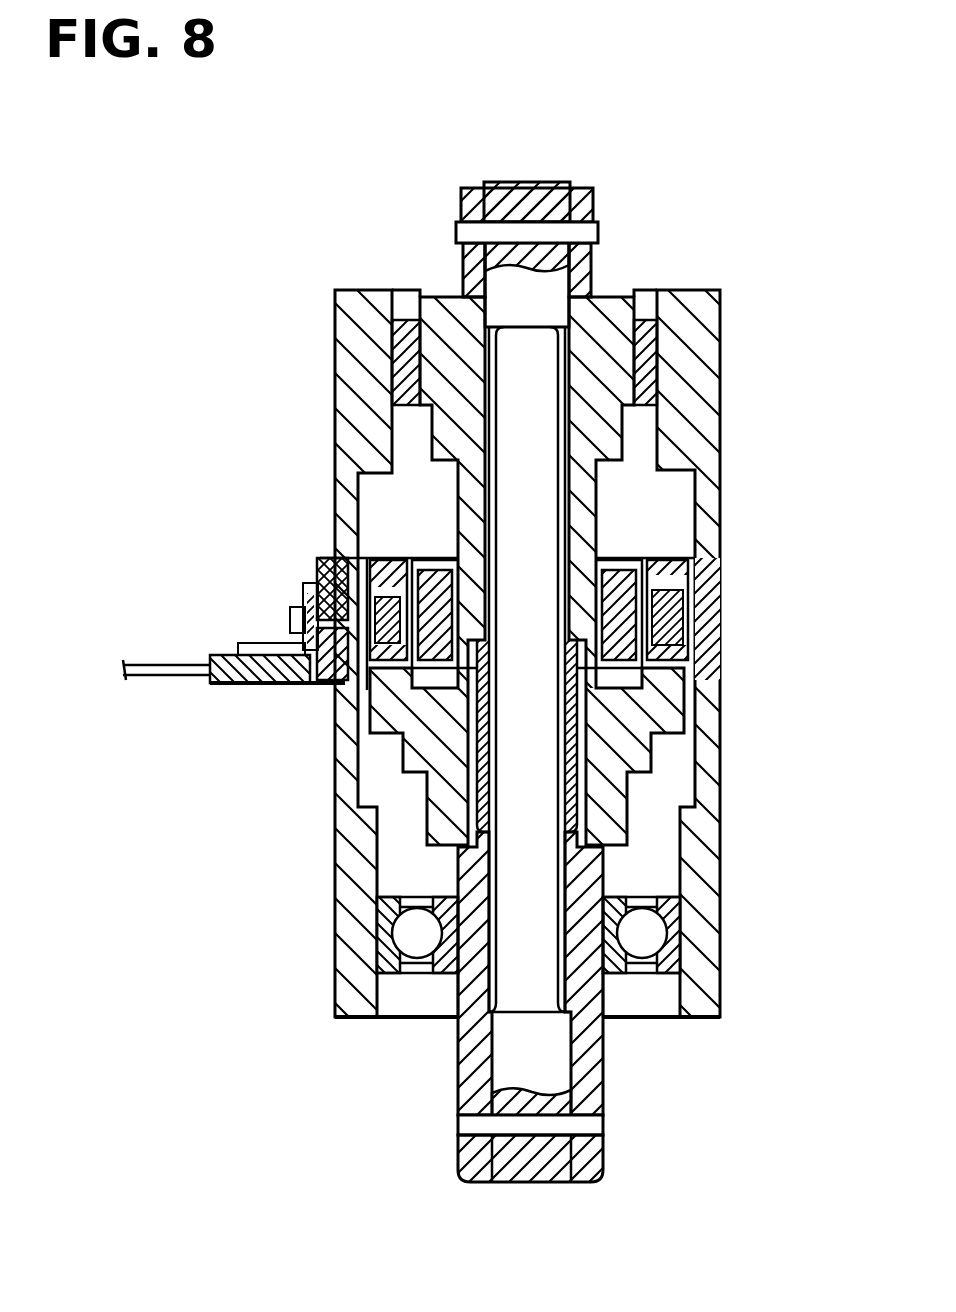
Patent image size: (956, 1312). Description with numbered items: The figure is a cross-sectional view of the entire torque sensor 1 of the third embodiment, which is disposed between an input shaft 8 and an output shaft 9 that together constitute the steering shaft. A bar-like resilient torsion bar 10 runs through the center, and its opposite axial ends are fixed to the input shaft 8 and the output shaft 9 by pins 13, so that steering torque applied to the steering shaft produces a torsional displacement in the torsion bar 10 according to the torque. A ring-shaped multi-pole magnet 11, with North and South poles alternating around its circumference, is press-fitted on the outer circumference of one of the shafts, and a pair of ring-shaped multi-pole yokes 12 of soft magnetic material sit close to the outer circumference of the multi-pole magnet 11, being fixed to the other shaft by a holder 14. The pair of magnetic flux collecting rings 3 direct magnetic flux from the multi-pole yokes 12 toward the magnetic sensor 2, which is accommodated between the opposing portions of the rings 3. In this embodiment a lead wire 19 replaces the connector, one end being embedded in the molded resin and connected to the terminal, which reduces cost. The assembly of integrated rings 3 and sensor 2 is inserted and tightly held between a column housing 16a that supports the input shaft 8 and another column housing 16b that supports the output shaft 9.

The torque sensor 1 is at (262, 446).
The magnetic sensor 2 is at (317, 565).
The magnetic flux collecting ring 3 is at (330, 560).
The input shaft 8 is at (603, 297).
The output shaft 9 is at (600, 1070).
The torsion bar 10 is at (545, 440).
The multi-pole magnet 11 is at (650, 568).
The multi-pole yoke 12 is at (680, 642).
The pin 13 is at (595, 219).
The holder 14 is at (682, 712).
The column housing 16a is at (708, 349).
The column housing 16b is at (718, 893).
The lead wire 19 is at (160, 678).